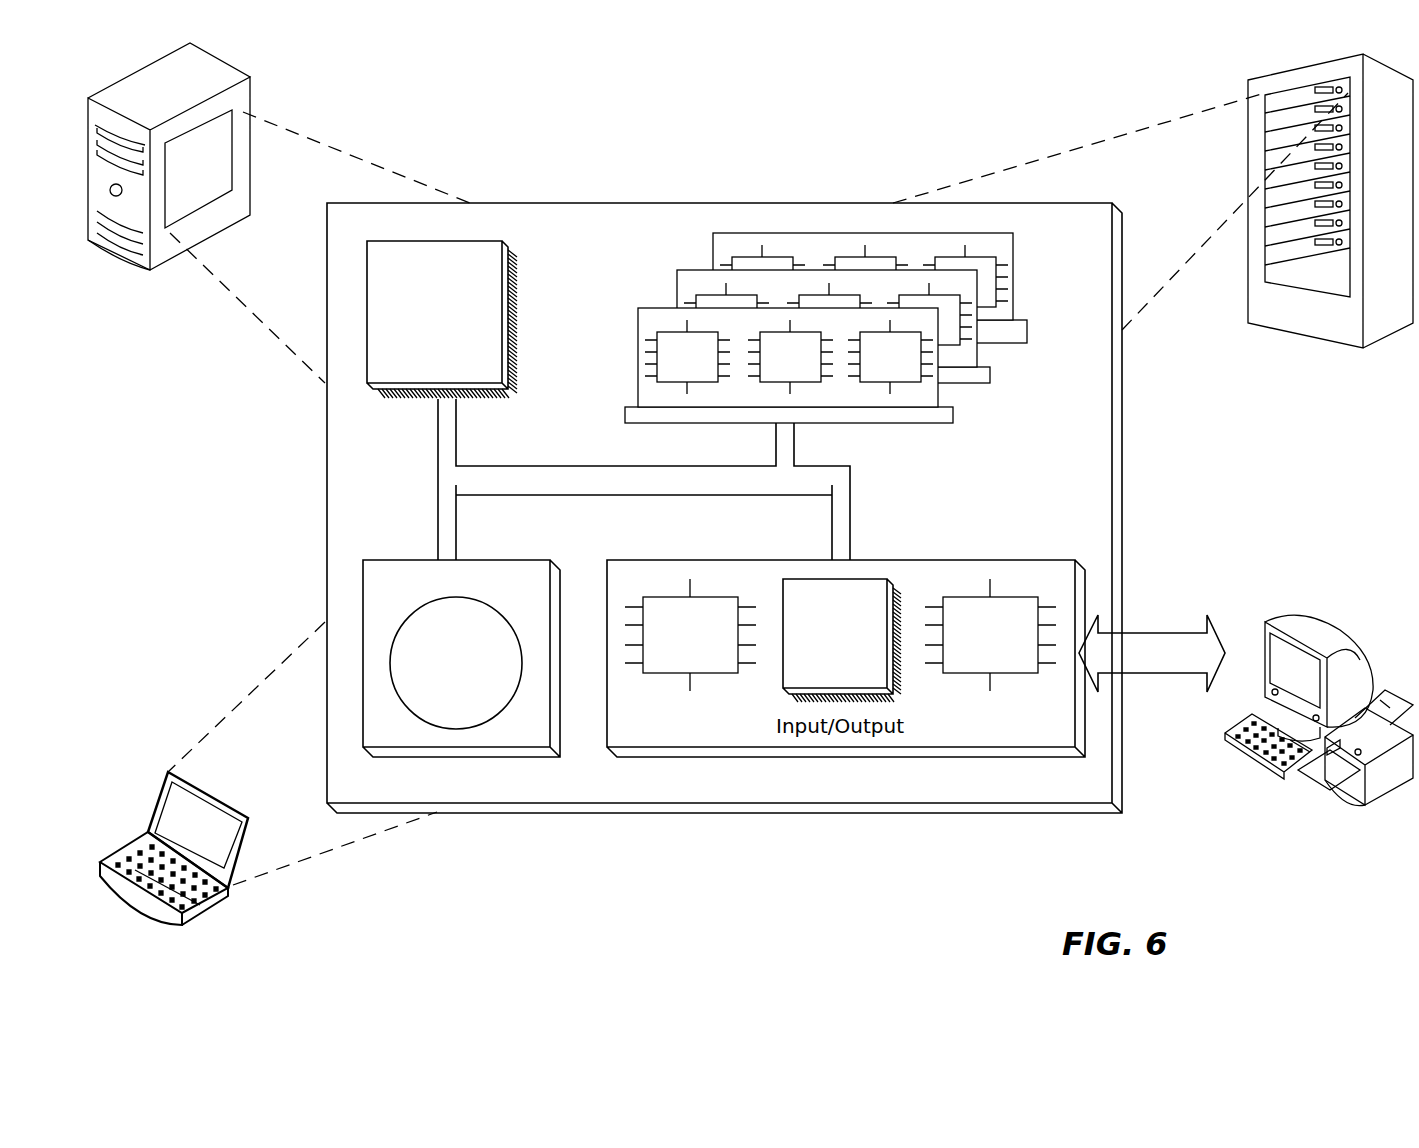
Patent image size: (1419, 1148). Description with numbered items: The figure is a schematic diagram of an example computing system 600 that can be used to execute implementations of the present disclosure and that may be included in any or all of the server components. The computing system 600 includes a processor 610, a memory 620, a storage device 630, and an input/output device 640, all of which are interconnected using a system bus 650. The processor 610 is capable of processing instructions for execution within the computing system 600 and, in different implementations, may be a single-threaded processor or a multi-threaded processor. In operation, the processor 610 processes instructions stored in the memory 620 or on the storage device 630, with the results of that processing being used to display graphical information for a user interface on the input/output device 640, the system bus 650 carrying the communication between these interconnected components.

The computing system 600 is at (530, 112).
The processor 610 is at (492, 377).
The memory 620 is at (1018, 381).
The storage device 630 is at (541, 740).
The input/output device 640 is at (1265, 630).
The system bus 650 is at (638, 485).